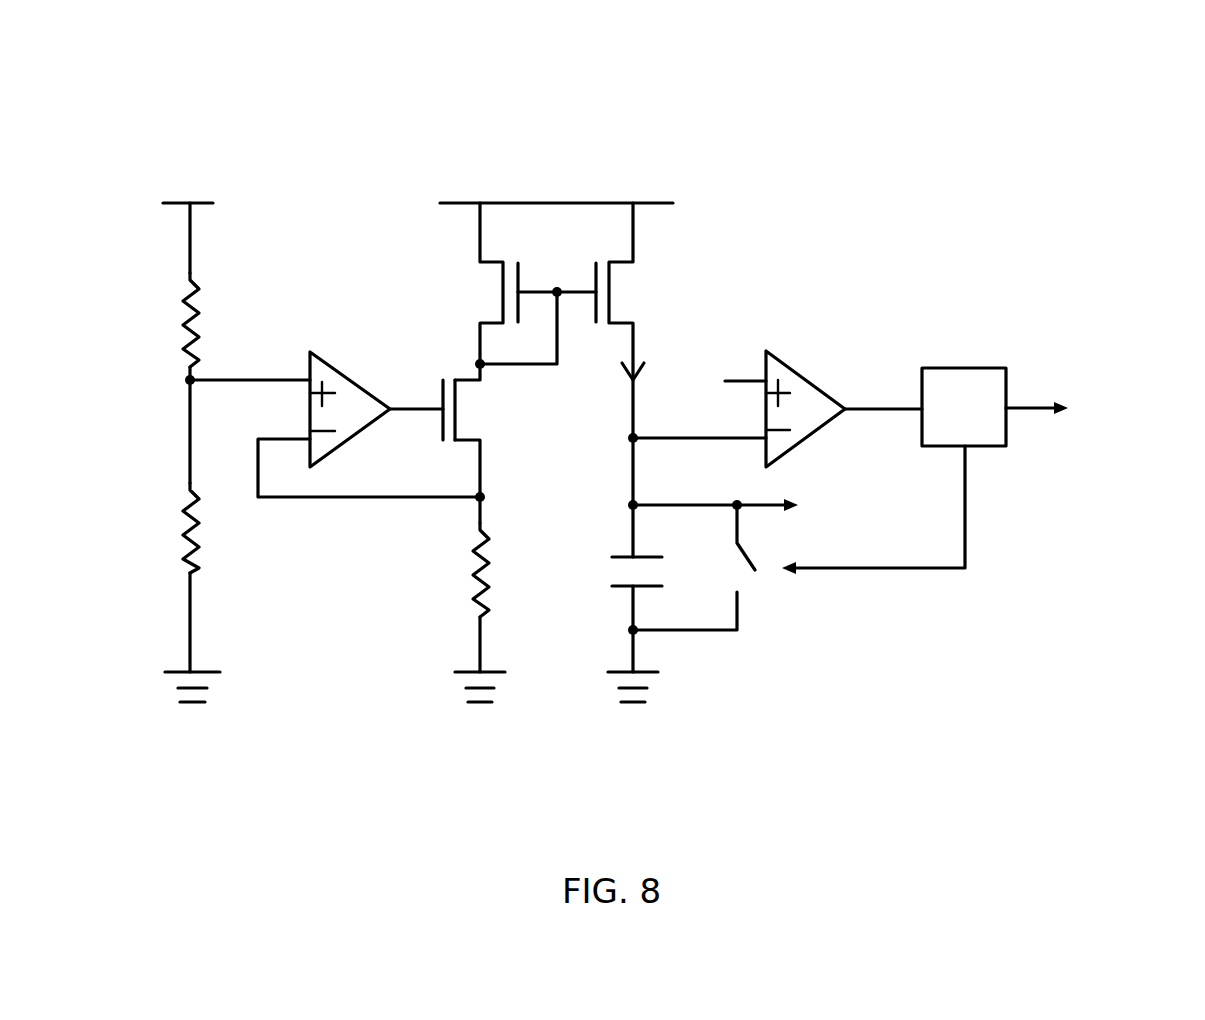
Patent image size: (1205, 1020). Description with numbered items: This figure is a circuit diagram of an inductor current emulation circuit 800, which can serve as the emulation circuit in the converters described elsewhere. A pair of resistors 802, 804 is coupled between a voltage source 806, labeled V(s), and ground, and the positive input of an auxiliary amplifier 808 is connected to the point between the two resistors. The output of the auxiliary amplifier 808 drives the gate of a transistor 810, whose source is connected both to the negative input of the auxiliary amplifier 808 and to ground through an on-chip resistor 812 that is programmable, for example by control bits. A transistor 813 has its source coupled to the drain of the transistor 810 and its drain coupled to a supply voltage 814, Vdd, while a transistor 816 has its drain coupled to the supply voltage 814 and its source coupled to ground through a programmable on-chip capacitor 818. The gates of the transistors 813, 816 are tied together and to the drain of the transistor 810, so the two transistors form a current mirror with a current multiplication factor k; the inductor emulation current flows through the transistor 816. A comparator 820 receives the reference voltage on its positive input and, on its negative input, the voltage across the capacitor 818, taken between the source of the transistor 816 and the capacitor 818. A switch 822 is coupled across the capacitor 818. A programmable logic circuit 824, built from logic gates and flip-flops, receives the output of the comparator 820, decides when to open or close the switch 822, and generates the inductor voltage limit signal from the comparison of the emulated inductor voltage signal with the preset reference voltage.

The inductor current emulation circuit 800 is at (654, 368).
The resistor 802 is at (197, 553).
The resistor 804 is at (197, 330).
The voltage source 806 is at (213, 203).
The auxiliary amplifier 808 is at (320, 358).
The transistor 810 is at (480, 433).
The on-chip resistor 812 is at (490, 592).
The transistor 813 is at (496, 286).
The supply voltage 814 is at (589, 191).
The transistor 816 is at (615, 380).
The on-chip capacitor 818 is at (650, 556).
The comparator 820 is at (843, 373).
The switch 822 is at (756, 562).
The programmable logic circuit 824 is at (925, 471).